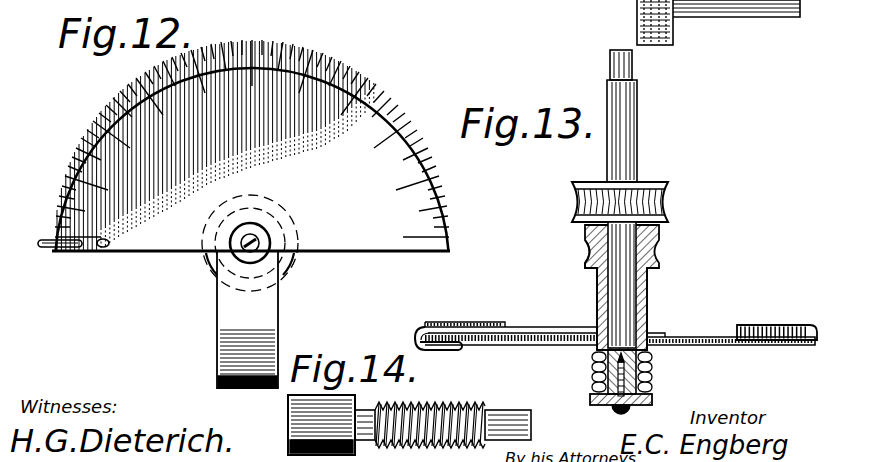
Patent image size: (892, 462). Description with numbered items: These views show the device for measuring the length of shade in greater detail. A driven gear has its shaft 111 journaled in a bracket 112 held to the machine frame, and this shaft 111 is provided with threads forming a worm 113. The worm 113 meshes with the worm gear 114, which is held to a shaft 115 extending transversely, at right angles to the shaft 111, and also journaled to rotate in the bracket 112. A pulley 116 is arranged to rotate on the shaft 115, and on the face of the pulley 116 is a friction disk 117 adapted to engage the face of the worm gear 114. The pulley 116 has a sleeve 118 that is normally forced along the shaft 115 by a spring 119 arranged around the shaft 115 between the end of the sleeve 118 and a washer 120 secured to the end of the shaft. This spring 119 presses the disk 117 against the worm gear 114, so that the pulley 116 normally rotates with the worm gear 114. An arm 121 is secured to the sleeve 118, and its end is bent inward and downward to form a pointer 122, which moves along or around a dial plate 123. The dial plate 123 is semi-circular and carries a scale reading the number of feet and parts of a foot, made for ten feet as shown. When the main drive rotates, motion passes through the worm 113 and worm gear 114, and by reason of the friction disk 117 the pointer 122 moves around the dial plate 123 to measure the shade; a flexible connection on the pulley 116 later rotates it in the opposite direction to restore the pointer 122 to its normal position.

In FIG. 14, the shaft 111 is at (531, 427).
In FIG. 12, the bracket 112 is at (222, 317).
In FIG. 14, the worm 113 is at (470, 406).
In FIG. 12, the worm gear 114 is at (286, 264).
In FIG. 13, the worm gear 114 is at (660, 184).
In FIG. 13, the shaft 115 is at (637, 116).
In FIG. 13, the pulley 116 is at (586, 263).
In FIG. 13, the friction disk 117 is at (662, 231).
In FIG. 13, the sleeve 118 is at (648, 300).
In FIG. 13, the spring 119 is at (640, 367).
In FIG. 12, the washer 120 is at (266, 240).
In FIG. 13, the washer 120 is at (598, 401).
In FIG. 13, the arm 121 is at (525, 321).
In FIG. 12, the pointer 122 is at (76, 252).
In FIG. 13, the pointer 122 is at (461, 351).
In FIG. 12, the dial plate 123 is at (332, 132).
In FIG. 13, the dial plate 123 is at (720, 337).